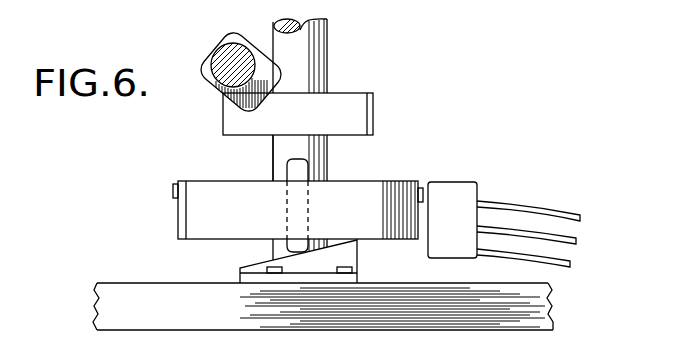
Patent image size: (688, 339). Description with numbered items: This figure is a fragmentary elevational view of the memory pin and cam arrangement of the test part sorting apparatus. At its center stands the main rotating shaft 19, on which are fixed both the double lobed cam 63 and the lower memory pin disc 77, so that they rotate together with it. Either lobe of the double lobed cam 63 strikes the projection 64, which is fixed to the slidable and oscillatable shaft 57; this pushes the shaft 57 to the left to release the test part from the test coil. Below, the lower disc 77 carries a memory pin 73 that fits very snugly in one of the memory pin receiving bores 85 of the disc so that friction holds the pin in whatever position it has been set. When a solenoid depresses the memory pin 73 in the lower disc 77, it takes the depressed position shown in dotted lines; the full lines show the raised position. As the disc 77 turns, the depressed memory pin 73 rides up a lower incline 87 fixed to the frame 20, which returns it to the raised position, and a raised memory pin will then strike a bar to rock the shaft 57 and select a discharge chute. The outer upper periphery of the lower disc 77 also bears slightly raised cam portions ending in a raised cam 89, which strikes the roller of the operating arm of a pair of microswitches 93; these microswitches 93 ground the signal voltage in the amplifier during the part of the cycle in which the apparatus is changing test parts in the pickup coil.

The rotating shaft 19 is at (320, 152).
The frame 20 is at (554, 308).
The shaft 57 is at (222, 55).
The double lobed cam 63 is at (316, 124).
The projection 64 is at (277, 78).
The memory pin 73 is at (290, 156).
The lower disc 77 is at (351, 227).
The memory pin receiving bores 85 is at (306, 198).
The lower incline 87 is at (352, 257).
The raised cam 89 is at (172, 194).
The microswitches 93 is at (465, 228).